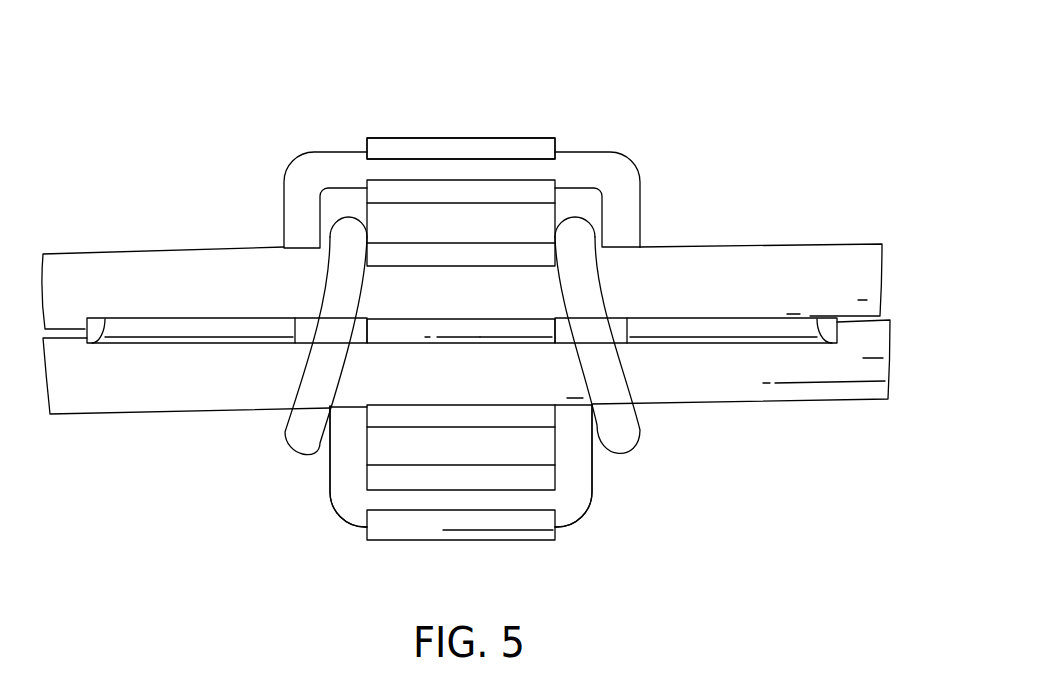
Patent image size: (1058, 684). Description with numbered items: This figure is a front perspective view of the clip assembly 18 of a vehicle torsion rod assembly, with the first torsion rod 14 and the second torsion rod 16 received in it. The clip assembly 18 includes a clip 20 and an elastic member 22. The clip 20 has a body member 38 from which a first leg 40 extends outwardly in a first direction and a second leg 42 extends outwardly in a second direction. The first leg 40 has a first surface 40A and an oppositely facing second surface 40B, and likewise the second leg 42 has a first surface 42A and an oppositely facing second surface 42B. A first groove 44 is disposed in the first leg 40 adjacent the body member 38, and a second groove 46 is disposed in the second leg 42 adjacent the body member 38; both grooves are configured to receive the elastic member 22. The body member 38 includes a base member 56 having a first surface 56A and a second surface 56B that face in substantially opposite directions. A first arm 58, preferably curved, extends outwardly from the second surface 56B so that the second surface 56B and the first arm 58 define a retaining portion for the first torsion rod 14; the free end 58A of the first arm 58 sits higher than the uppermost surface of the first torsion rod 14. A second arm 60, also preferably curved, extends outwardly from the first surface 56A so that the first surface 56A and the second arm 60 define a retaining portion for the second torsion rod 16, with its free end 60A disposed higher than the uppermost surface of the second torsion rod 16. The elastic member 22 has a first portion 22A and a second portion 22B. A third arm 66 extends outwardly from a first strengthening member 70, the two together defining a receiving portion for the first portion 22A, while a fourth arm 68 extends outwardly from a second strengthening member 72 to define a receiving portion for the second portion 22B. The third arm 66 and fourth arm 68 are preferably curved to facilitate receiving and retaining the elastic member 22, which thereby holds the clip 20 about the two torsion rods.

The first torsion rod 14 is at (835, 400).
The second torsion rod 16 is at (826, 245).
The clip assembly 18 is at (254, 118).
The clip 20 is at (484, 128).
The elastic member 22 is at (608, 489).
The first portion of the elastic member 22A is at (568, 525).
The second portion of the elastic member 22B is at (336, 150).
The body member 38 is at (440, 552).
The first leg 40 is at (217, 330).
The first surface of the first leg 40A is at (137, 318).
The second surface of the first leg 40B is at (173, 345).
The second leg 42 is at (712, 326).
The first surface of the second leg 42A is at (773, 318).
The second surface of the second leg 42B is at (743, 345).
The first groove 44 is at (305, 333).
The second groove 46 is at (618, 333).
The base member 56 is at (473, 328).
The first surface of the base member 56A is at (452, 318).
The second surface of the base member 56B is at (495, 347).
The first arm 58 is at (417, 400).
The free end of the first arm 58A is at (452, 417).
The second arm 60 is at (525, 267).
The free end of the second arm 60A is at (467, 255).
The third arm 66 is at (507, 540).
The fourth arm 68 is at (422, 138).
The first strengthening member 70 is at (408, 477).
The second strengthening member 72 is at (518, 192).